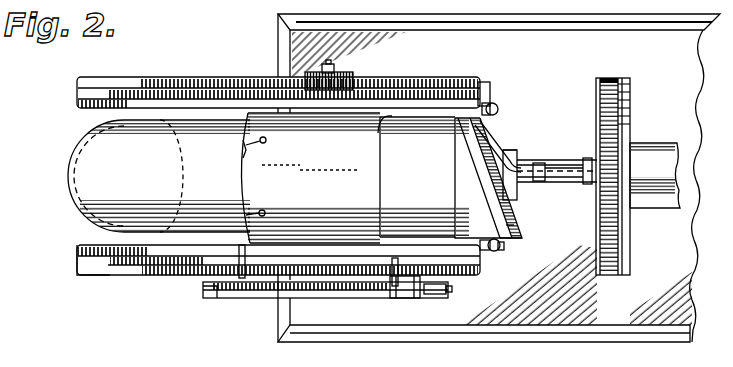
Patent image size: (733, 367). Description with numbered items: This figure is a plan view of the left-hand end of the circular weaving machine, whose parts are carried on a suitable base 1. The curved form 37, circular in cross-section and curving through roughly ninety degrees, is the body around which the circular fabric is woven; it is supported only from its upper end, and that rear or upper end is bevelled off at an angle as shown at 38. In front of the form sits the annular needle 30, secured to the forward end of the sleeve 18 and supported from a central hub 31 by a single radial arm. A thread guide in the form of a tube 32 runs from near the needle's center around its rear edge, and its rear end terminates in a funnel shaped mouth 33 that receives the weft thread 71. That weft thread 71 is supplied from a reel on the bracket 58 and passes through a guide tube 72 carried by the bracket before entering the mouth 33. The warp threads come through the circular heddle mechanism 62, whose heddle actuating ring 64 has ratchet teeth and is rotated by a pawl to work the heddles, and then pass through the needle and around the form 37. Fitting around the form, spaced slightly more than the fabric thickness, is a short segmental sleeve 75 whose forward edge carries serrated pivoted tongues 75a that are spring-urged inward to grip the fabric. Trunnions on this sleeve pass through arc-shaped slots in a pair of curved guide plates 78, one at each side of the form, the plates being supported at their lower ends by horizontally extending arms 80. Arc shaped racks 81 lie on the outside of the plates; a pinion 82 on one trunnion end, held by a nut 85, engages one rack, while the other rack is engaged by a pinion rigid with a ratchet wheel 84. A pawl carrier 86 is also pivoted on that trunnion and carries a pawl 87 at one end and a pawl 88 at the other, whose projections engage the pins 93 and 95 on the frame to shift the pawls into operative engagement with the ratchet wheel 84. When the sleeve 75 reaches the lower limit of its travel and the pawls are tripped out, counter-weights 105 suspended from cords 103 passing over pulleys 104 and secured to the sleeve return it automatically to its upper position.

The base 1 is at (569, 326).
The sleeve 18 is at (553, 160).
The needle 30 is at (518, 230).
The central hub 31 is at (508, 148).
The thread guide tube 32 is at (492, 133).
The funnel shaped mouth 33 is at (538, 166).
The curved form 37 is at (70, 184).
The bevelled end 38 is at (479, 184).
The bracket 58 is at (660, 147).
The circular heddle mechanism 62 is at (625, 108).
The heddle actuating ring 64 is at (607, 78).
The weft thread 71 is at (579, 185).
The guide tube 72 is at (591, 167).
The segmental sleeve 75 is at (374, 172).
The pivoted tongues 75a is at (240, 150).
The curved guide plates 78 is at (408, 106).
The horizontally extending arms 80 is at (80, 272).
The arc shaped racks 81 is at (172, 292).
The pinion 82 is at (356, 79).
The ratchet wheel 84 is at (376, 283).
The nut 85 is at (334, 70).
The pawl carrier 86 is at (398, 293).
The pawl 87 is at (428, 300).
The pawl 88 is at (242, 287).
The pin 93 is at (397, 256).
The pin 95 is at (240, 251).
The cords 103 is at (512, 213).
The pulleys 104 is at (490, 103).
The counter-weights 105 is at (504, 247).